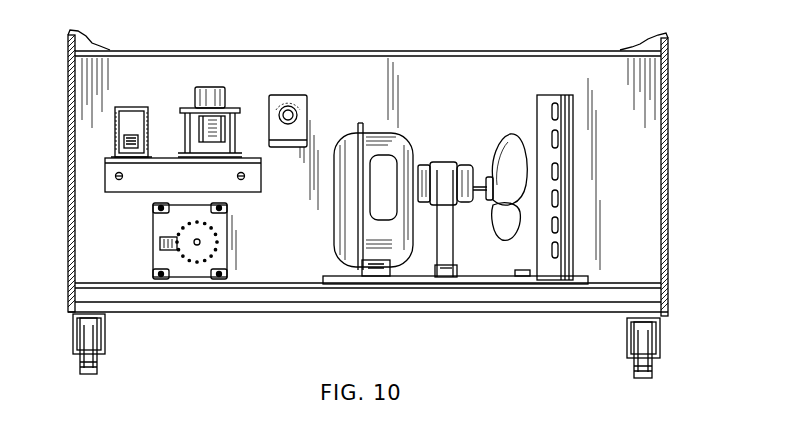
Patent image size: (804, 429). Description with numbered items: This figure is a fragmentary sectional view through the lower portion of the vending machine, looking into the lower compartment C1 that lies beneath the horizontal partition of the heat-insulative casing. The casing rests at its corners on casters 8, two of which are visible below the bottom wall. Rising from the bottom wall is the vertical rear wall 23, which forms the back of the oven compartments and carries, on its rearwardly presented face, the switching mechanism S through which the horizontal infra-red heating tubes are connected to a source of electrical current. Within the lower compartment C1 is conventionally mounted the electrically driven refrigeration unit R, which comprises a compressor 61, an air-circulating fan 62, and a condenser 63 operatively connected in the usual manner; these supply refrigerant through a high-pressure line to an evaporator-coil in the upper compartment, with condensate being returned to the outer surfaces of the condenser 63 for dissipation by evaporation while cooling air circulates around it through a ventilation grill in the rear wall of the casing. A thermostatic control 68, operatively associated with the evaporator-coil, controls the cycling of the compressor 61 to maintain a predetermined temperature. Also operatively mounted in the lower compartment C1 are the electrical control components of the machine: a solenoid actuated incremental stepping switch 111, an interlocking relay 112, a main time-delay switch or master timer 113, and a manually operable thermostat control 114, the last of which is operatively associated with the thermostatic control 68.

The casters 8 is at (94, 360).
The rear wall 23 is at (362, 74).
The lower compartment C1 is at (450, 90).
The switching mechanism S is at (174, 97).
The compressor 61 is at (378, 140).
The air-circulating fan 62 is at (495, 145).
The condenser 63 is at (565, 262).
The thermostatic control 68 is at (311, 122).
The solenoid actuated incremental stepping switch 111 is at (222, 252).
The interlocking relay 112 is at (113, 118).
The main time-delay switch 113 is at (222, 92).
The manually operable thermostat control 114 is at (292, 147).
The refrigeration unit R is at (403, 143).